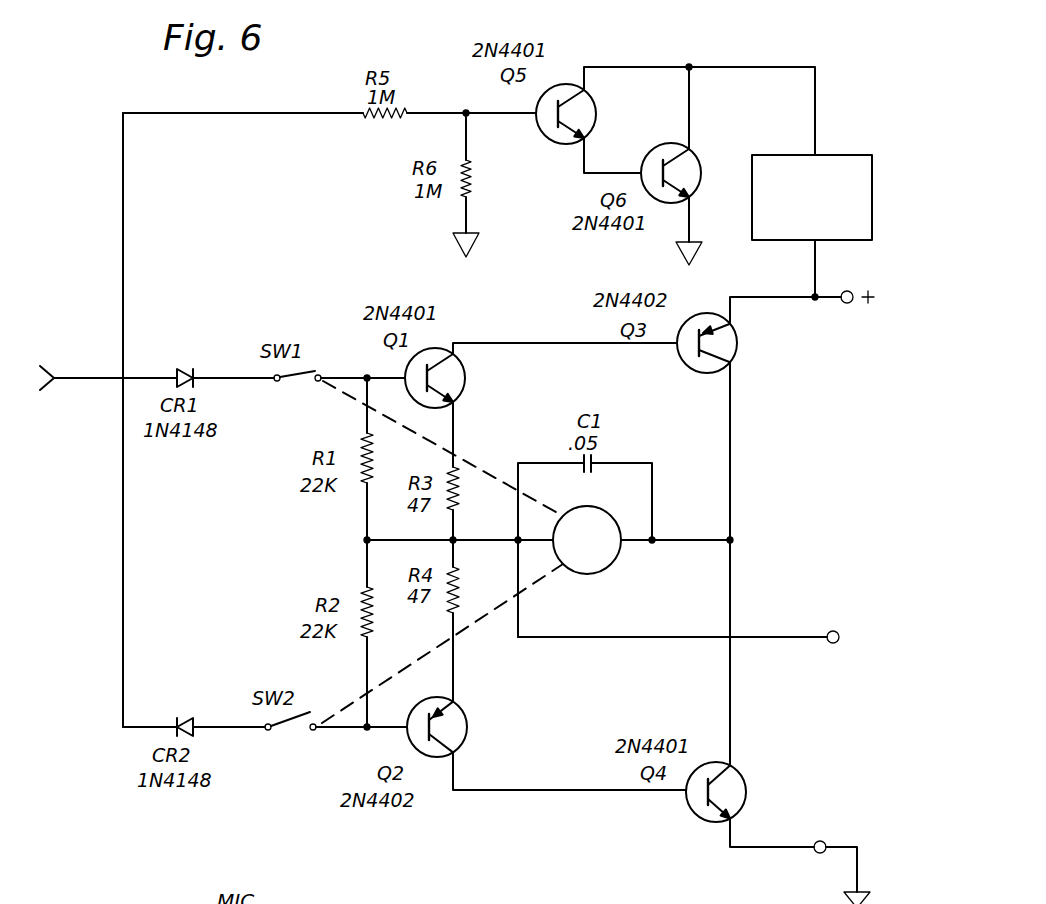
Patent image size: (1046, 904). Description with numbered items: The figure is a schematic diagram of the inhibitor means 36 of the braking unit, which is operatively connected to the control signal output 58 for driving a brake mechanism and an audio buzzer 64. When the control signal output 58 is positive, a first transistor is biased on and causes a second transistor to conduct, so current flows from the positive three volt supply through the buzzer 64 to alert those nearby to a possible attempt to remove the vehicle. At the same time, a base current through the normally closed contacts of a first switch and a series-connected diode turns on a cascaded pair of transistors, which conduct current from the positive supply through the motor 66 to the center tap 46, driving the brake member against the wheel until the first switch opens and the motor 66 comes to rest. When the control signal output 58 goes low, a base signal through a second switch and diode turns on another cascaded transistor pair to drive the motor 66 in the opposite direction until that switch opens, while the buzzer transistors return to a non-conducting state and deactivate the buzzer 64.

The control signal output 58 is at (87, 376).
The audio buzzer 64 is at (835, 153).
The motor 66 is at (612, 568).
The center point tap 46 is at (774, 637).
The inhibitor means 36 is at (102, 670).